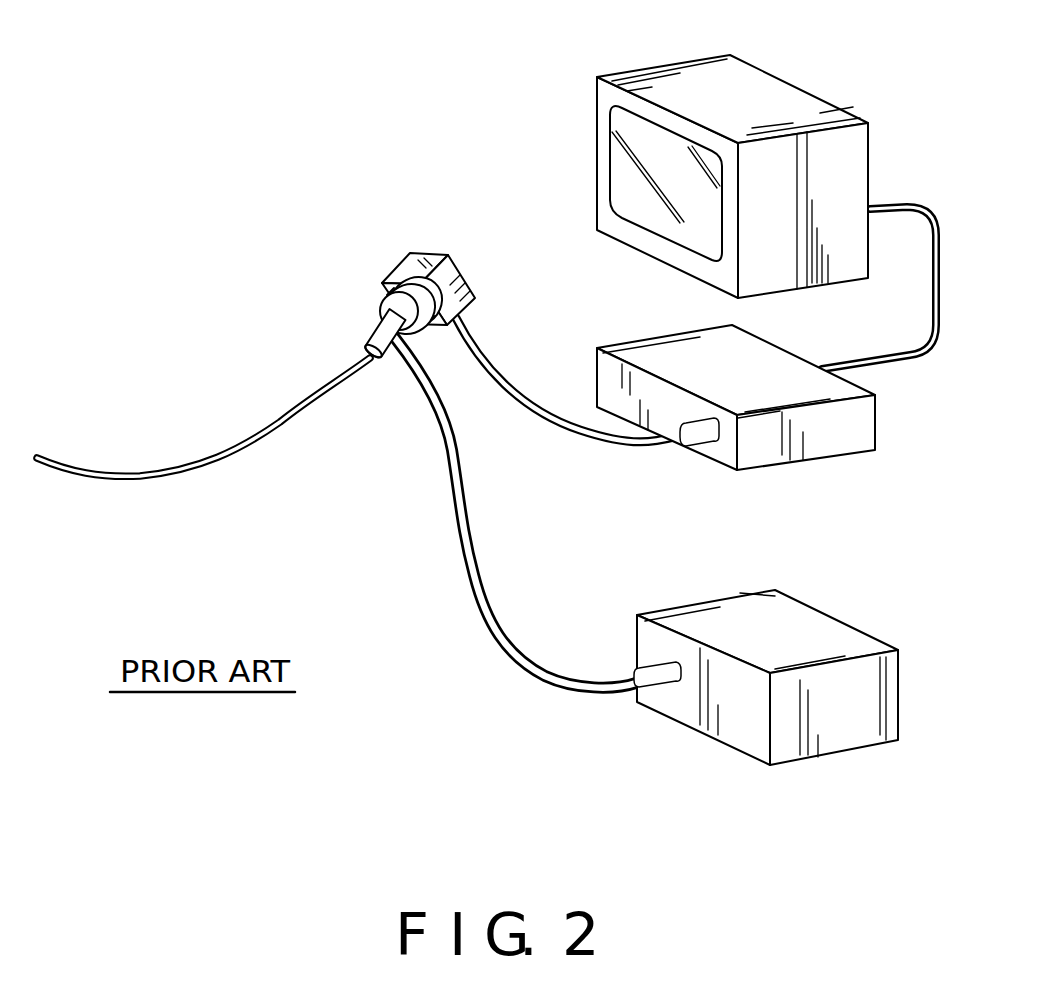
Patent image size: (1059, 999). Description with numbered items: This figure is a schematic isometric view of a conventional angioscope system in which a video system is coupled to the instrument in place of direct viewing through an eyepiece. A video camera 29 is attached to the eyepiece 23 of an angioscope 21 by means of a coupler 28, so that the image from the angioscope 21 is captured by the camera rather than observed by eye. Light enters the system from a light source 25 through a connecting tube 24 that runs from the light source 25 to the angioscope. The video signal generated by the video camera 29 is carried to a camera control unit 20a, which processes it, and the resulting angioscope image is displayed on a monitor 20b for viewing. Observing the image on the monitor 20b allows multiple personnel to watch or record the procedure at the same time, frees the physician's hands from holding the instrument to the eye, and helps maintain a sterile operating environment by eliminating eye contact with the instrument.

The camera control unit 20a is at (650, 343).
The monitor 20b is at (639, 76).
The angioscope 21 is at (269, 436).
The eyepiece 23 is at (388, 317).
The connecting tube 24 is at (473, 613).
The light source 25 is at (672, 612).
The coupler 28 is at (387, 297).
The video camera 29 is at (397, 263).